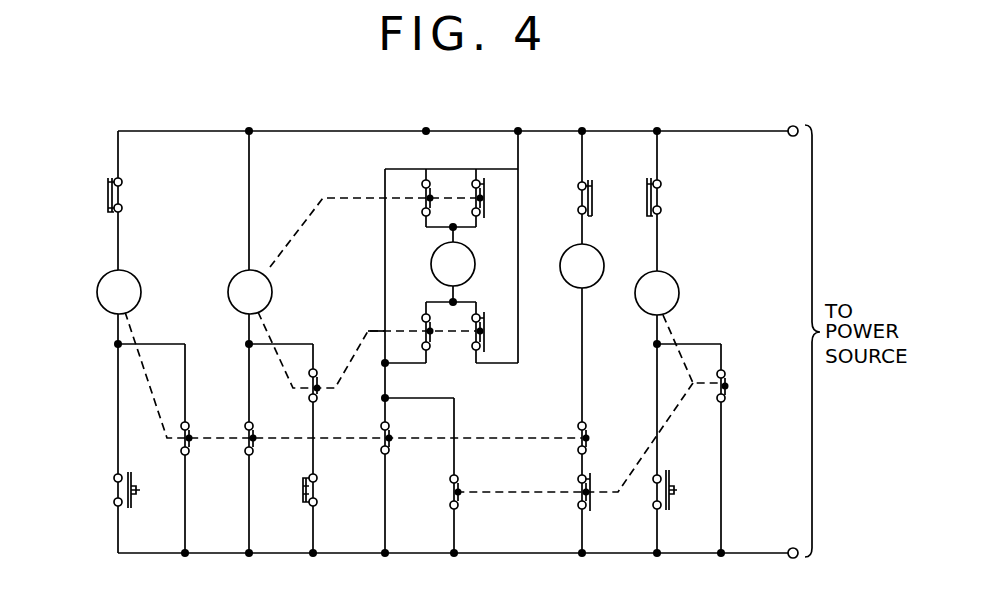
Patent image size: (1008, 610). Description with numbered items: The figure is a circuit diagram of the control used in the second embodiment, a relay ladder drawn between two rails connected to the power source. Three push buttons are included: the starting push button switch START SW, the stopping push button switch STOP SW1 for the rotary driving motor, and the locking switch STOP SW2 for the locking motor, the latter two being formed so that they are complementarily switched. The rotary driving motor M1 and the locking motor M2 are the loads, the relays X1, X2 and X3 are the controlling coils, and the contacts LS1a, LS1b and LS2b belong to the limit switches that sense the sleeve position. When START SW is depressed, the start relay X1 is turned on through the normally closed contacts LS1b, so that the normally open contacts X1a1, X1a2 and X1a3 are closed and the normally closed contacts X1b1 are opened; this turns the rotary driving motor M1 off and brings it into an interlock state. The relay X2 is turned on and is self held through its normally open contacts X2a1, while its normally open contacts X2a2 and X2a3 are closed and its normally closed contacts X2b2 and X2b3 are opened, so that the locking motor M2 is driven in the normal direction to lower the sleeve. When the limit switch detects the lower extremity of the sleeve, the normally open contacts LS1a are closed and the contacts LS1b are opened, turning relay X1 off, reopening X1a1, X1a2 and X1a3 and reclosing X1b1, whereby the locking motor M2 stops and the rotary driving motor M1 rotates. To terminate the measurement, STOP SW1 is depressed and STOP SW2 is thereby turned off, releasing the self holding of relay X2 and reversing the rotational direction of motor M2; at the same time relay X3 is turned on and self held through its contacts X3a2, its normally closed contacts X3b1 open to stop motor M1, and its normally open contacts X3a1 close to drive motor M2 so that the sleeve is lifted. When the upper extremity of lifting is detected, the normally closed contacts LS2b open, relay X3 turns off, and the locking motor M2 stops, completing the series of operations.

The start relay X1 is at (119, 292).
The relay X2 is at (250, 292).
The relay X3 is at (657, 293).
The rotary driving motor M1 is at (582, 266).
The locking motor M2 is at (453, 264).
The normally open contacts of limit switch LS1 LS1a is at (559, 196).
The normally closed contacts of limit switch LS1 LS1b is at (89, 193).
The normally closed contacts of limit switch LS2 LS2b is at (678, 199).
The normally open contacts of relay X1 X1a1 is at (207, 427).
The normally open contacts of relay X1 X1a2 is at (273, 427).
The normally open contacts of relay X1 X1a3 is at (412, 433).
The normally closed contacts of relay X1 X1b1 is at (557, 433).
The normally open contacts of relay X2 X2a1 is at (338, 392).
The normally open contacts of relay X2 X2a2 is at (413, 318).
The normally open contacts of relay X2 X2a3 is at (412, 213).
The normally closed contacts of relay X2 X2b2 is at (490, 319).
The normally closed contacts of relay X2 X2b3 is at (490, 195).
The normally open contacts of relay X3 X3a1 is at (481, 498).
The normally open contacts of relay X3 X3a2 is at (749, 380).
The normally closed contacts of relay X3 X3b1 is at (556, 490).
The starting push button switch START SW is at (91, 490).
The stopping push button switch STOP SW1 is at (679, 509).
The locking switch STOP SW2 is at (284, 490).